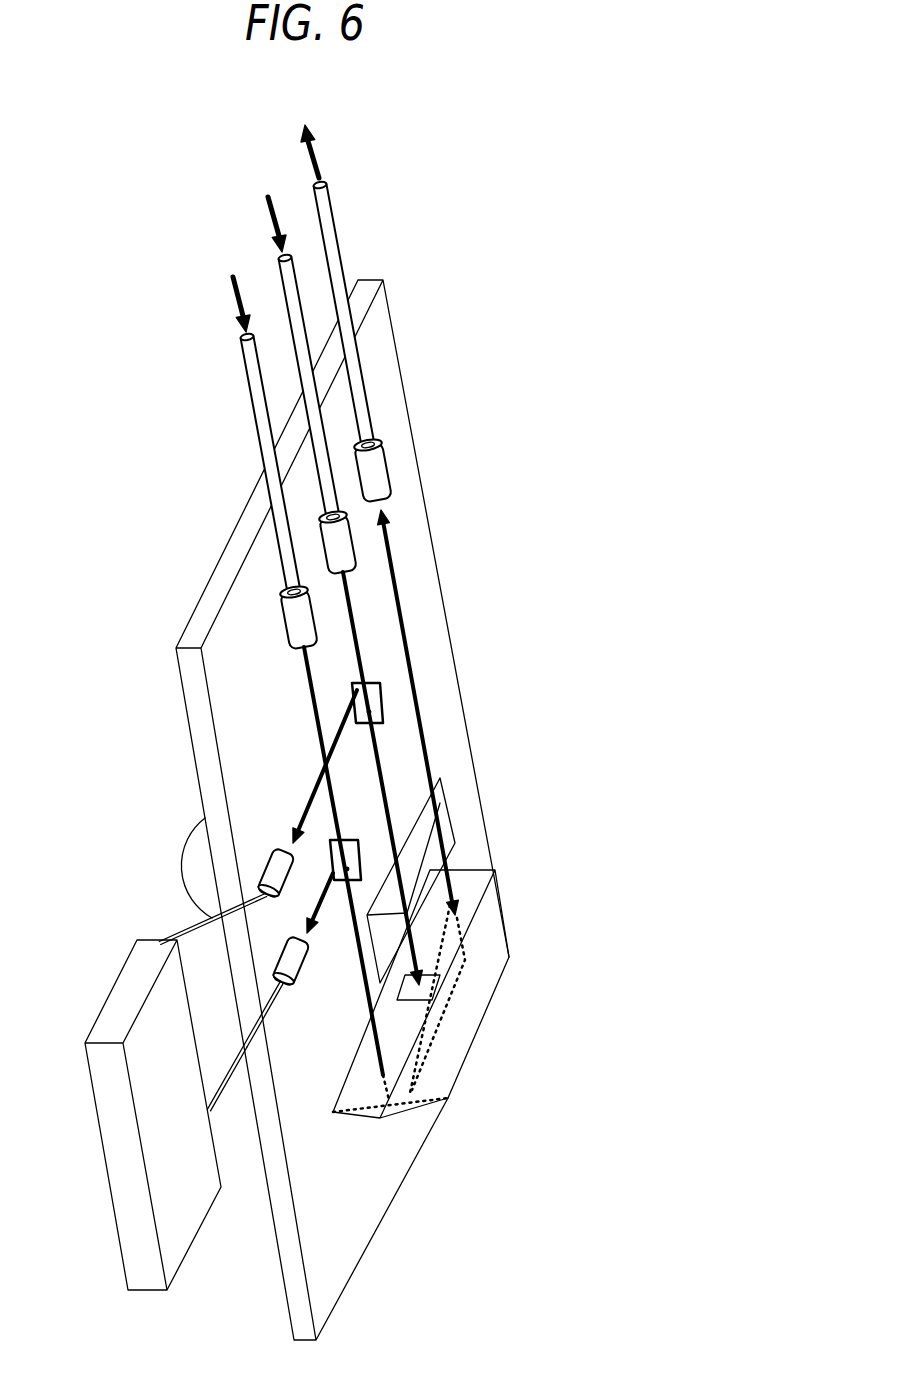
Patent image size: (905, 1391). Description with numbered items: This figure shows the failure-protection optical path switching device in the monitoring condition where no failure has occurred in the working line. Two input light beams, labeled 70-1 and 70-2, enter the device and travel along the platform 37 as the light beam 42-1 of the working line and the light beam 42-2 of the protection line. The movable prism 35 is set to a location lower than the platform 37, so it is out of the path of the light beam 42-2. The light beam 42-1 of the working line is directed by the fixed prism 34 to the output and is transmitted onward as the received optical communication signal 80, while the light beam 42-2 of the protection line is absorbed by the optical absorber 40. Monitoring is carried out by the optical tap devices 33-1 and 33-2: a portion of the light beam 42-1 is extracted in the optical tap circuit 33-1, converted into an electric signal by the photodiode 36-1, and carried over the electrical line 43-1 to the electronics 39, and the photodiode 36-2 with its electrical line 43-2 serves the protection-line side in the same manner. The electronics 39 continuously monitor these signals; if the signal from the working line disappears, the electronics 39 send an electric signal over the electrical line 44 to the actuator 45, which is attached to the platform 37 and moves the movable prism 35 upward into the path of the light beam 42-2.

The received optical communication signal 80 is at (312, 157).
The first input light 70-1 is at (232, 287).
The second input light 70-2 is at (268, 203).
The light beam of the working line 42-1 is at (313, 717).
The light beam of the protection line 42-2 is at (353, 667).
The optical tap device 33-1 is at (360, 840).
The optical tap device 33-2 is at (383, 693).
The movable prism 35 is at (420, 840).
The fixed prism 34 is at (447, 1062).
The optical absorber 40 is at (420, 993).
The photodiode 36-1 is at (284, 953).
The photodiode 36-2 is at (270, 870).
The actuator 45 is at (196, 840).
The electrical line 44 is at (167, 907).
The electrical line 43-1 is at (228, 1085).
The electrical line 43-2 is at (217, 983).
The electronics 39 is at (178, 1243).
The platform 37 is at (347, 1260).